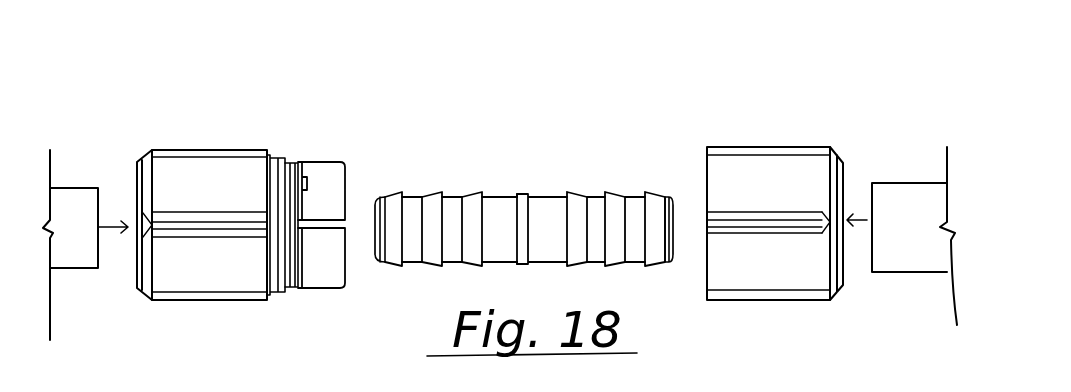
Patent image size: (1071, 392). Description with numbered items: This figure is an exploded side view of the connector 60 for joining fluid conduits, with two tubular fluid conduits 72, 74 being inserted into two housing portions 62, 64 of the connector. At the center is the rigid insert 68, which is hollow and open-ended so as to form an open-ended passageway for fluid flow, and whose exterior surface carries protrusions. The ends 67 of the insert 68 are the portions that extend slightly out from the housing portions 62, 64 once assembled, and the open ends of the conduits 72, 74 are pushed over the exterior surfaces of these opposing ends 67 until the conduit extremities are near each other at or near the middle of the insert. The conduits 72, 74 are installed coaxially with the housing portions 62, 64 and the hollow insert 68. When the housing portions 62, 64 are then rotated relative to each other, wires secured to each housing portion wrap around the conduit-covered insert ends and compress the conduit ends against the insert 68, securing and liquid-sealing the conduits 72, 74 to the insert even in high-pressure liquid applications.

The connector 60 is at (265, 62).
The housing portion 62 is at (212, 190).
The housing portion 64 is at (738, 183).
The ends of the rigid insert 67 is at (377, 203).
The rigid insert 68 is at (495, 210).
The fluid conduit 72 is at (72, 188).
The fluid conduit 74 is at (900, 183).